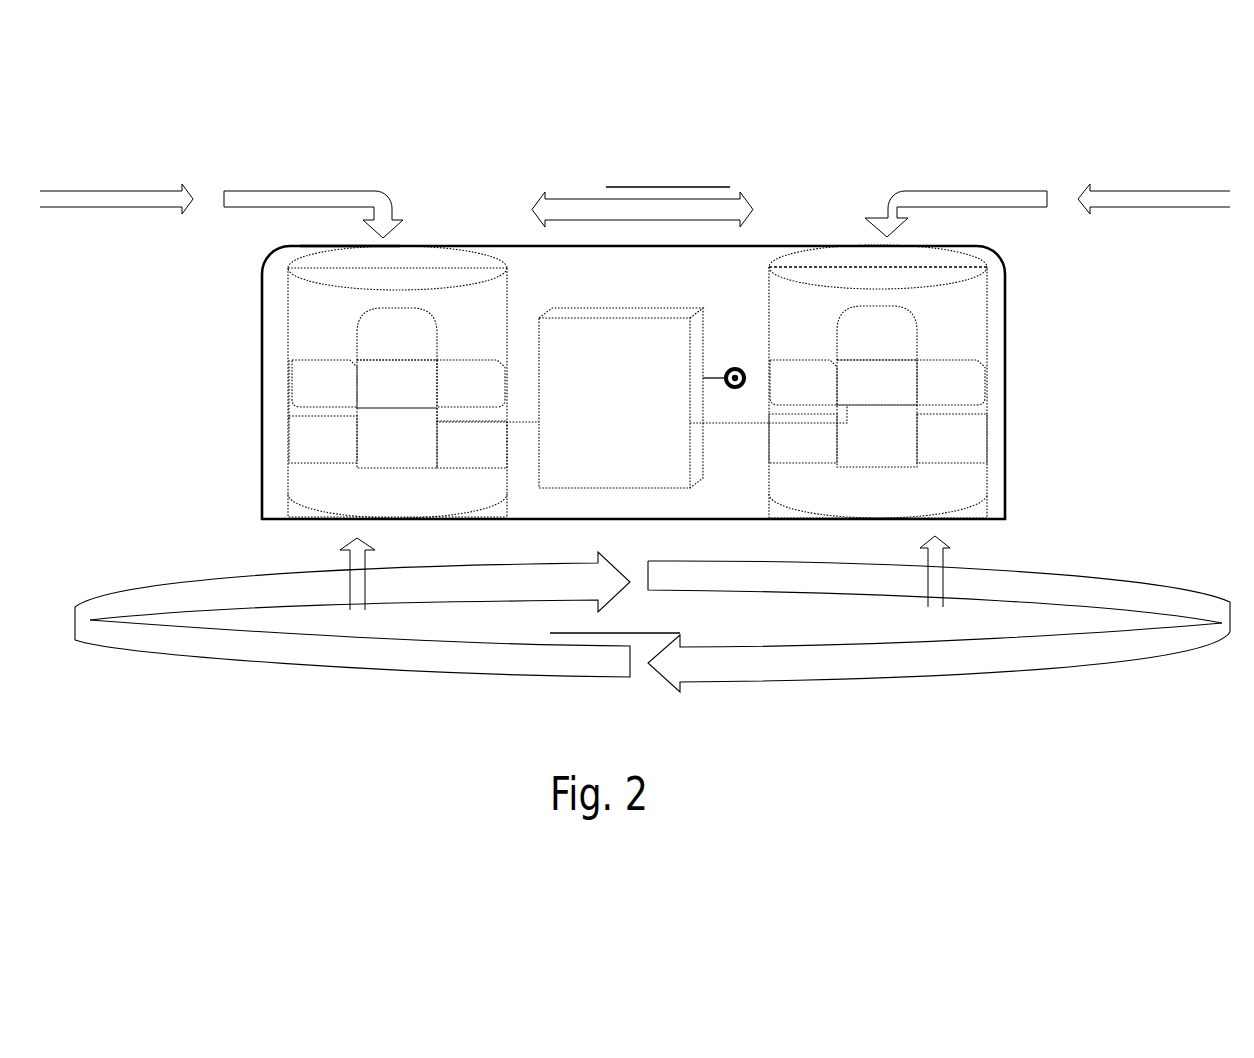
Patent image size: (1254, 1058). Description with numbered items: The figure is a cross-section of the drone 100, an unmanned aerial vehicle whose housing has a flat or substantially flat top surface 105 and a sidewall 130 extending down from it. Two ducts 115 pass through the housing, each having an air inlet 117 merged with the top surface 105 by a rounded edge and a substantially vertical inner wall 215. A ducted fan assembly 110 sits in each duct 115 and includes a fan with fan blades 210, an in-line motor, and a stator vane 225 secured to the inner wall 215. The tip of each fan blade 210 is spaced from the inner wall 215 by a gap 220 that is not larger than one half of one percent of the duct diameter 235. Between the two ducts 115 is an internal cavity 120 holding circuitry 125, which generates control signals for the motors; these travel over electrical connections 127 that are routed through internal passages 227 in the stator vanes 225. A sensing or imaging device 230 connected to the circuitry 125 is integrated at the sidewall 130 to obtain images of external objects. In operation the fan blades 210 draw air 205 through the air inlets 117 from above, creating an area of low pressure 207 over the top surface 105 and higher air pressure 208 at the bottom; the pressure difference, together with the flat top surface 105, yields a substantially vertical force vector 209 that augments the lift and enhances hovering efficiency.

The drone 100 is at (150, 274).
The top surface 105 is at (782, 246).
The fan assembly 110 is at (439, 323).
The duct 115 is at (437, 260).
The air inlet 117 is at (341, 246).
The internal cavity 120 is at (600, 301).
The circuitry 125 is at (598, 434).
The electrical connection 127 is at (528, 423).
The sidewall 130 is at (1005, 312).
The air 205 is at (287, 183).
The low pressure 207 is at (573, 190).
The air pressure 208 is at (1087, 563).
The force vector 209 is at (347, 560).
The fan blade 210 is at (306, 382).
The inner wall 215 is at (292, 325).
The gap 220 is at (288, 391).
The stator vane 225 is at (298, 442).
The internal passage 227 is at (783, 427).
The sensing/imaging device 230 is at (733, 368).
The diameter 235 is at (940, 265).